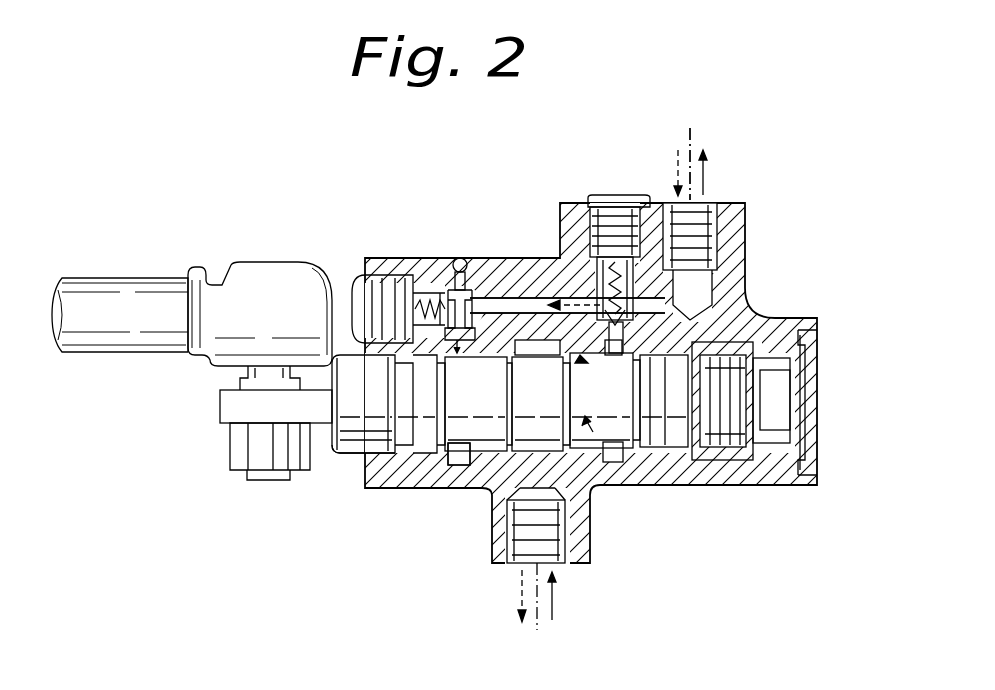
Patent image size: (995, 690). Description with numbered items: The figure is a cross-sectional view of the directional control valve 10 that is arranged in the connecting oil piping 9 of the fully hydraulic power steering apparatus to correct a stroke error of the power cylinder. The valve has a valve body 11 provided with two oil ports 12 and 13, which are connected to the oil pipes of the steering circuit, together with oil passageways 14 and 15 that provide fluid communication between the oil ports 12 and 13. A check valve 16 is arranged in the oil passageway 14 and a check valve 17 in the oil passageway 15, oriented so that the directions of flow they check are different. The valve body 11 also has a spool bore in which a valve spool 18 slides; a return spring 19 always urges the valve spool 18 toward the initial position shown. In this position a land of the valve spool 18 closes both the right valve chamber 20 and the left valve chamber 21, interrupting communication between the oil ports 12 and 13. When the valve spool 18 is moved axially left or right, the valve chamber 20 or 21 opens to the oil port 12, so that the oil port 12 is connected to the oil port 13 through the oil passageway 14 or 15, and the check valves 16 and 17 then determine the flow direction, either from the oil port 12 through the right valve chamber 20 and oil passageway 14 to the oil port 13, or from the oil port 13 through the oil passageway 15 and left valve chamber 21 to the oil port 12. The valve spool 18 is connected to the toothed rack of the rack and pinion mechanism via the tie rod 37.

The connecting oil piping 9 is at (694, 130).
The directional control valve 10 is at (591, 344).
The valve body 11 is at (743, 256).
The oil port 12 is at (557, 538).
The oil port 13 is at (712, 206).
The oil passageway 14 is at (595, 332).
The oil passageway 15 is at (471, 329).
The check valve 16 is at (608, 268).
The check valve 17 is at (432, 283).
The valve spool 18 is at (346, 455).
The return spring 19 is at (724, 458).
The valve chamber 20 is at (584, 455).
The valve chamber 21 is at (492, 470).
The tie rod 37 is at (90, 276).